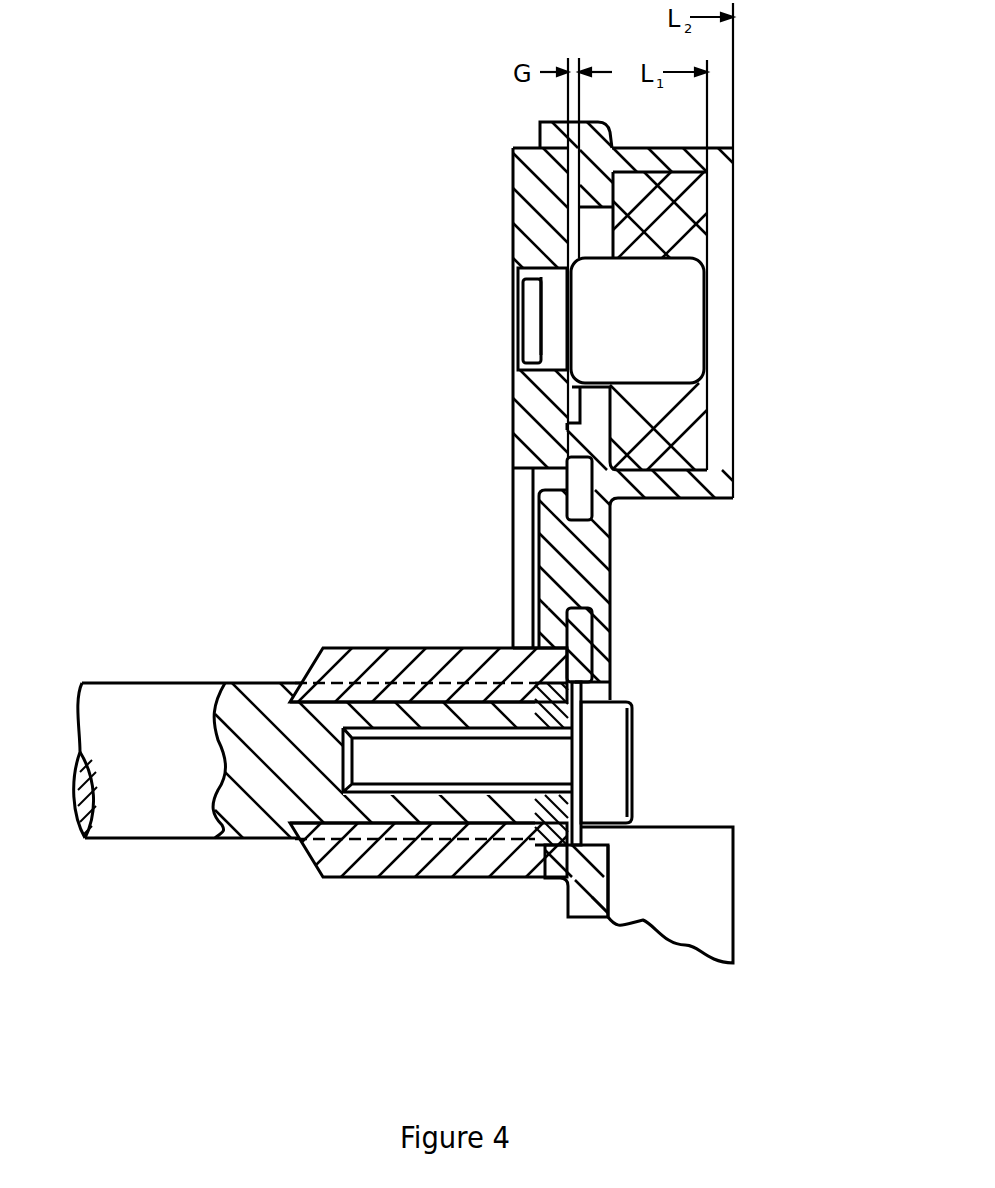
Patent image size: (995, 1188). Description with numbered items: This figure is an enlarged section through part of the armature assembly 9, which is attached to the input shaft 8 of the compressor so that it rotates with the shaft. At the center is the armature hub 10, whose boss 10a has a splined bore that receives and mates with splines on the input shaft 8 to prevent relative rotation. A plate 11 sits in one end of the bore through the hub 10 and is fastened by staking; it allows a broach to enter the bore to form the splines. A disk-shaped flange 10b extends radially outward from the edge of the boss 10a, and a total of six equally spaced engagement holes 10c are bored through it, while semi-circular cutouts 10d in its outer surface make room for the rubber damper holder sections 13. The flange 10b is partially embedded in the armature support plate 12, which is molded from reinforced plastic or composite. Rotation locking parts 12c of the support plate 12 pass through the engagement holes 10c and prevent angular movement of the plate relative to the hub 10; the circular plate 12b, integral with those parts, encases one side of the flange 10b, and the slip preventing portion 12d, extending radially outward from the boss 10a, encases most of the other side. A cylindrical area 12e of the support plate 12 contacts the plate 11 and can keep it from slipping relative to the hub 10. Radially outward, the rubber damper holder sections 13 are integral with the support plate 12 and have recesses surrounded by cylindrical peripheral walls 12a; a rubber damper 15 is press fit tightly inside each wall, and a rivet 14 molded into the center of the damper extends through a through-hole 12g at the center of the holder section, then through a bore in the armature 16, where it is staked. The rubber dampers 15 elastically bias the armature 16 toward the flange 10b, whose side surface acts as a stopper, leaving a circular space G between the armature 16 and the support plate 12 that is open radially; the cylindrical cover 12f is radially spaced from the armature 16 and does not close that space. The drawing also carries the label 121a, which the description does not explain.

The input shaft 8 is at (110, 707).
The armature assembly 9 is at (799, 125).
The armature hub 10 is at (455, 855).
The boss 10a is at (335, 668).
The disk-shaped flange 10b is at (557, 427).
The engagement holes 10c is at (540, 592).
The semi-circular cutouts 10d is at (596, 403).
The plate 11 is at (552, 830).
The armature support plate 12 is at (597, 182).
The cylindrical peripheral walls 12a is at (688, 150).
The circular plate 12b is at (610, 645).
The rotation locking parts 12c is at (612, 537).
The slip preventing portion 12d is at (555, 527).
The cylindrical area 12e is at (610, 680).
The cylindrical cover 12f is at (540, 128).
The through-hole 12g is at (728, 472).
The housing top flange 121a is at (688, 160).
The rubber damper holder sections 13 is at (765, 390).
The rivets 14 is at (660, 312).
The rubber dampers 15 is at (670, 223).
The armature 16 is at (542, 246).